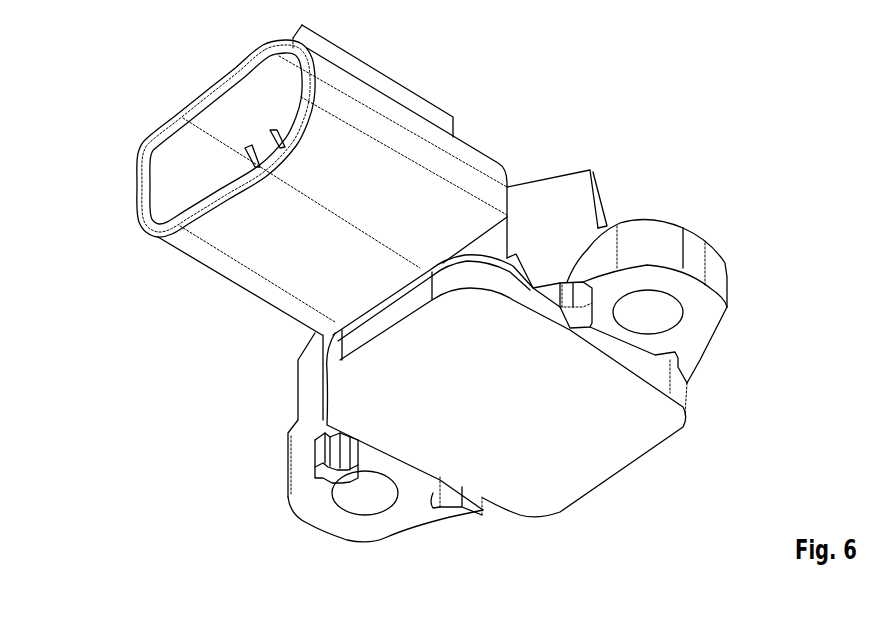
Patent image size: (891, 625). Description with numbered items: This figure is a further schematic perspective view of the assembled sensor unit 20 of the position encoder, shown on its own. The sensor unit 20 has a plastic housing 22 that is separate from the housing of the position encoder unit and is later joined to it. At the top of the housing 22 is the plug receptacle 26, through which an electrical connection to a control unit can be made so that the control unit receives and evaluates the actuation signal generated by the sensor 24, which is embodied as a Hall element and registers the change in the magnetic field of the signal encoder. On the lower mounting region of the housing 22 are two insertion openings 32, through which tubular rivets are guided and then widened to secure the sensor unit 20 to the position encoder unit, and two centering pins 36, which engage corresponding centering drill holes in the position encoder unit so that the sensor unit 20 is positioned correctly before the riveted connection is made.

The sensor unit 20 is at (95, 62).
The housing 22 is at (546, 190).
The sensor 24 is at (615, 473).
The plug receptacle 26 is at (155, 148).
The insertion opening 32 is at (655, 308).
The centering pin 36 is at (565, 293).